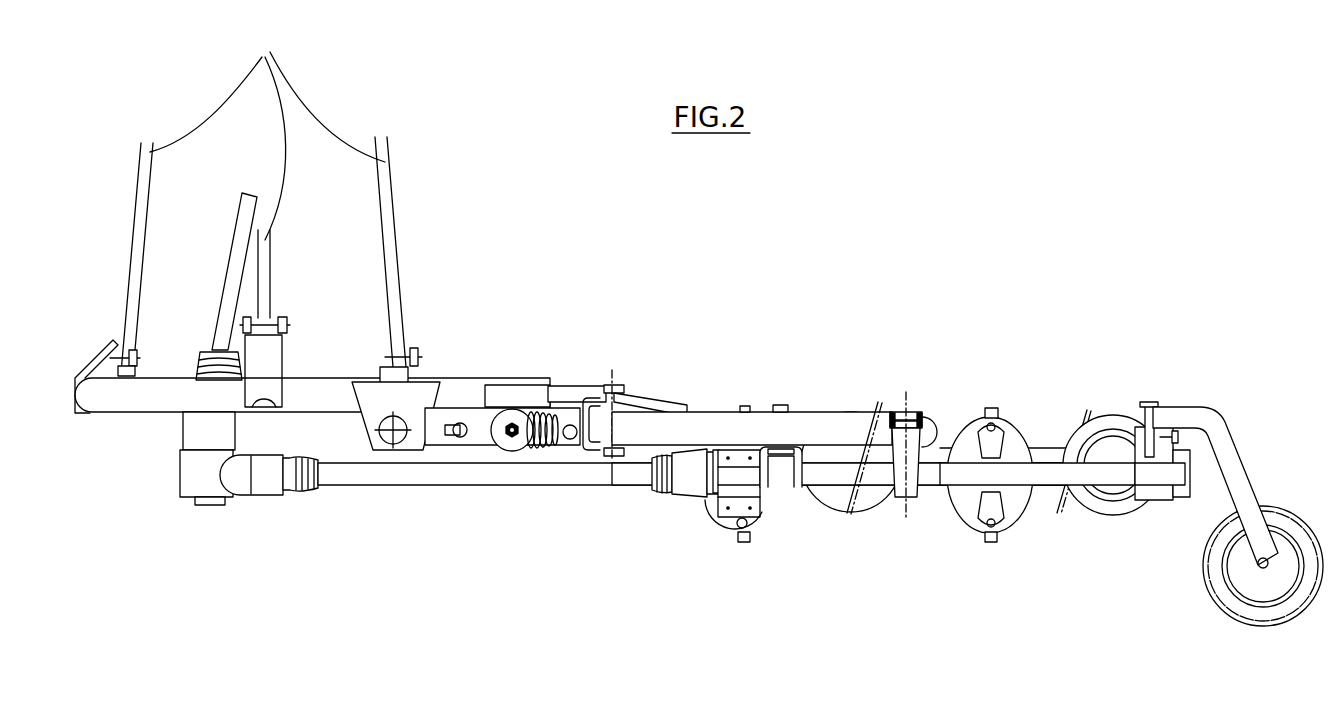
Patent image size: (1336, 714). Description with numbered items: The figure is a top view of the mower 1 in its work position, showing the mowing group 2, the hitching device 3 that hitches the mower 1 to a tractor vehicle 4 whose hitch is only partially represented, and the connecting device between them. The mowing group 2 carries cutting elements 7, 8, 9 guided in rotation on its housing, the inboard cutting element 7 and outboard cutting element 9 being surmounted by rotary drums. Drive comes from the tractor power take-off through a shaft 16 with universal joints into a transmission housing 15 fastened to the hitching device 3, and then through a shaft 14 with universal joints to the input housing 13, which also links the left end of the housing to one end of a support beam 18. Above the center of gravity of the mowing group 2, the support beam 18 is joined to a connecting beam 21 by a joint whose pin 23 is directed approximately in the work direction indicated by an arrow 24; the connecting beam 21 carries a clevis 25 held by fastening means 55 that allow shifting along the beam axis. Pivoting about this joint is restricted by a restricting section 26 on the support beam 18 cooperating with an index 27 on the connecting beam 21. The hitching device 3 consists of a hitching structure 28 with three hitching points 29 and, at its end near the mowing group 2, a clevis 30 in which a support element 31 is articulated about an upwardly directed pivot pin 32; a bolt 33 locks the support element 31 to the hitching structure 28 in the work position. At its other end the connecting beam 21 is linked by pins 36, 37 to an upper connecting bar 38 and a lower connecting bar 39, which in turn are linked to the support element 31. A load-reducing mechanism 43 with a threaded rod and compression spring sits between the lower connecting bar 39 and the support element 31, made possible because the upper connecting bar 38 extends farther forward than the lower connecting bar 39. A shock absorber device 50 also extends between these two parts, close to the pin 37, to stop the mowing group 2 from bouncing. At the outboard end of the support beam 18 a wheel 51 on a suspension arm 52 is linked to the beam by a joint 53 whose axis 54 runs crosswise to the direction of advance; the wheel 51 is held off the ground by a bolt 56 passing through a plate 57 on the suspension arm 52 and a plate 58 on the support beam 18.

The mower 1 is at (802, 248).
The mowing group 2 is at (849, 548).
The hitching device 3 is at (100, 420).
The tractor vehicle 4 is at (263, 198).
The inboard cutting element 7 is at (722, 492).
The cutting element 8 is at (970, 502).
The outboard cutting element 9 is at (1087, 502).
The input housing 13 is at (752, 495).
The shaft with universal joints 14 is at (343, 485).
The transmission housing 15 is at (192, 497).
The shaft with universal joints 16 is at (228, 278).
The support beam 18 is at (1060, 473).
The connecting beam 21 is at (845, 415).
The pin 23 is at (905, 495).
The arrow 24 is at (990, 160).
The clevis 25 is at (948, 432).
The restricting section 26 is at (764, 467).
The index 27 is at (786, 468).
The hitching structure 28 is at (148, 403).
The hitching points 29 is at (135, 358).
The clevis 30 is at (370, 423).
The support element 31 is at (485, 445).
The pivot pin 32 is at (395, 447).
The bolt 33 is at (466, 423).
The pin 36 is at (613, 396).
The pin 37 is at (612, 456).
The upper connecting bar 38 is at (572, 385).
The lower connecting bar 39 is at (592, 452).
The load-reducing mechanism 43 is at (523, 390).
The shock absorber device 50 is at (600, 424).
The wheel 51 is at (1246, 600).
The suspension arm 52 is at (1237, 456).
The joint 53 is at (1156, 410).
The axis 54 is at (1144, 422).
The fastening means 55 is at (903, 412).
The bolt 56 is at (1178, 450).
The plate 57 is at (1180, 437).
The plate 58 is at (1138, 487).